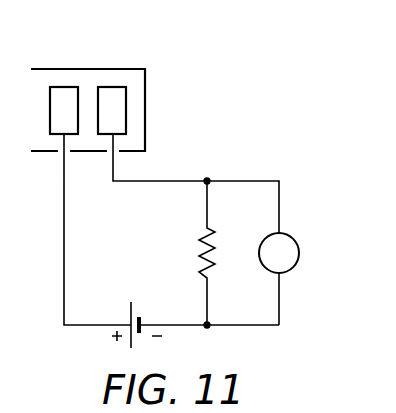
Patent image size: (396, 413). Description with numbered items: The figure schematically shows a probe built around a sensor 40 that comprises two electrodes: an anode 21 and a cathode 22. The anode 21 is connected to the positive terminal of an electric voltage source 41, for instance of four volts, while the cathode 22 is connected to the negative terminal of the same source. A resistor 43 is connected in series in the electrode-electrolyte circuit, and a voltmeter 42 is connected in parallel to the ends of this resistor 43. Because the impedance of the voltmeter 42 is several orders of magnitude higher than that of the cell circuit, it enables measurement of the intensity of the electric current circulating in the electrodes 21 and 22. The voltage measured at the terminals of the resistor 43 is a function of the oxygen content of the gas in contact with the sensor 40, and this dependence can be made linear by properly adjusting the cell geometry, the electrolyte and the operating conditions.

The anode 21 is at (61, 92).
The cathode 22 is at (110, 92).
The sensor 40 is at (134, 112).
The electric voltage source 41 is at (139, 308).
The voltmeter 42 is at (299, 254).
The resistor 43 is at (198, 262).